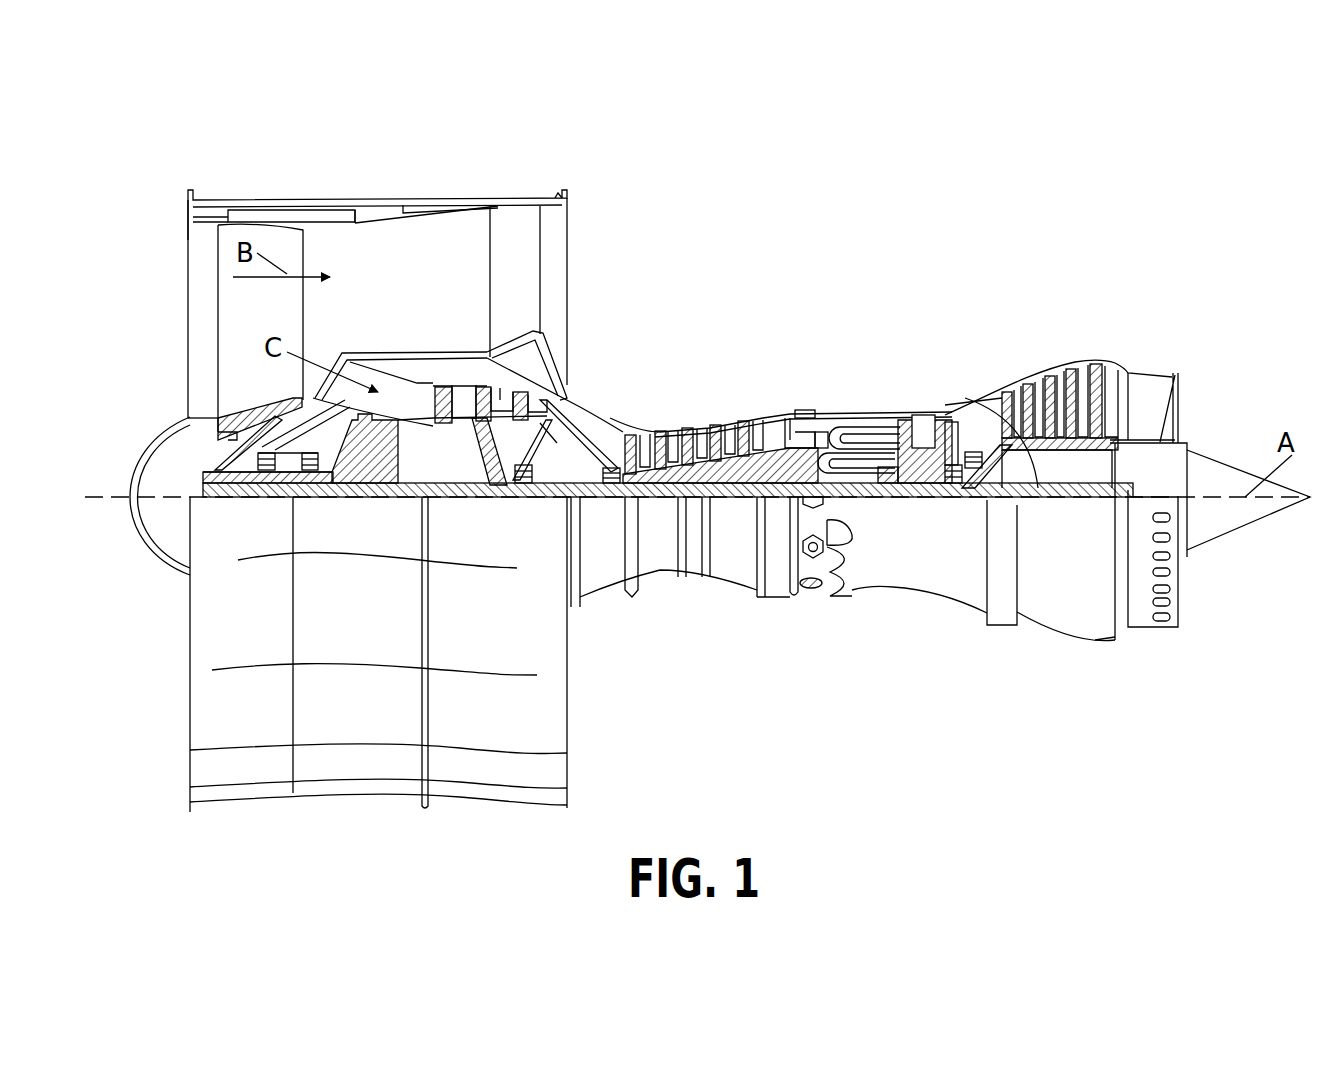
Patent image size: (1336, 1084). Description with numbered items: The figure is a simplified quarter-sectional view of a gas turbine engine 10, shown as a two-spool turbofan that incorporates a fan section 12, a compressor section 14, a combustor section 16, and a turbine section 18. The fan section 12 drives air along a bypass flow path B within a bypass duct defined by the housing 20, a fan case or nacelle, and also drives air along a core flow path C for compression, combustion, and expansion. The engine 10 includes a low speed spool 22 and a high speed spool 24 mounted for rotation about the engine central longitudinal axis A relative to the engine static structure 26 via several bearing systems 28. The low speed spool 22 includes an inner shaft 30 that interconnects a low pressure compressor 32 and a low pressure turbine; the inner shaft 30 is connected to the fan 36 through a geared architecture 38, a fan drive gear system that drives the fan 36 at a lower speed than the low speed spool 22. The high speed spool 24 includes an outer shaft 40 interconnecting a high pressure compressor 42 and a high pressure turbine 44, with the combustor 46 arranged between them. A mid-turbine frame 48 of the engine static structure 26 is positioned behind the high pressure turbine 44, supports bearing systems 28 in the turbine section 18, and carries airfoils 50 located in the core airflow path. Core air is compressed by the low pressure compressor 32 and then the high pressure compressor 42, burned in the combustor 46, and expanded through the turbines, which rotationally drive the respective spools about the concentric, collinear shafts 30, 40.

The gas turbine engine 10 is at (858, 240).
The fan section 12 is at (310, 152).
The compressor section 14 is at (620, 385).
The combustor section 16 is at (850, 370).
The turbine section 18 is at (1020, 325).
The housing 20 is at (365, 208).
The low speed spool 22 is at (737, 505).
The high speed spool 24 is at (757, 452).
The engine static structure 26 is at (773, 600).
The bearing systems 28 is at (522, 493).
The inner shaft 30 is at (592, 500).
The low pressure compressor 32 is at (497, 395).
The fan 36 is at (266, 327).
The geared architecture 38 is at (378, 500).
The outer shaft 40 is at (865, 450).
The high pressure compressor 42 is at (720, 430).
The high pressure turbine 44 is at (918, 420).
The combustor 46 is at (848, 437).
The mid-turbine frame 48 is at (968, 392).
The airfoils 50 is at (1010, 457).